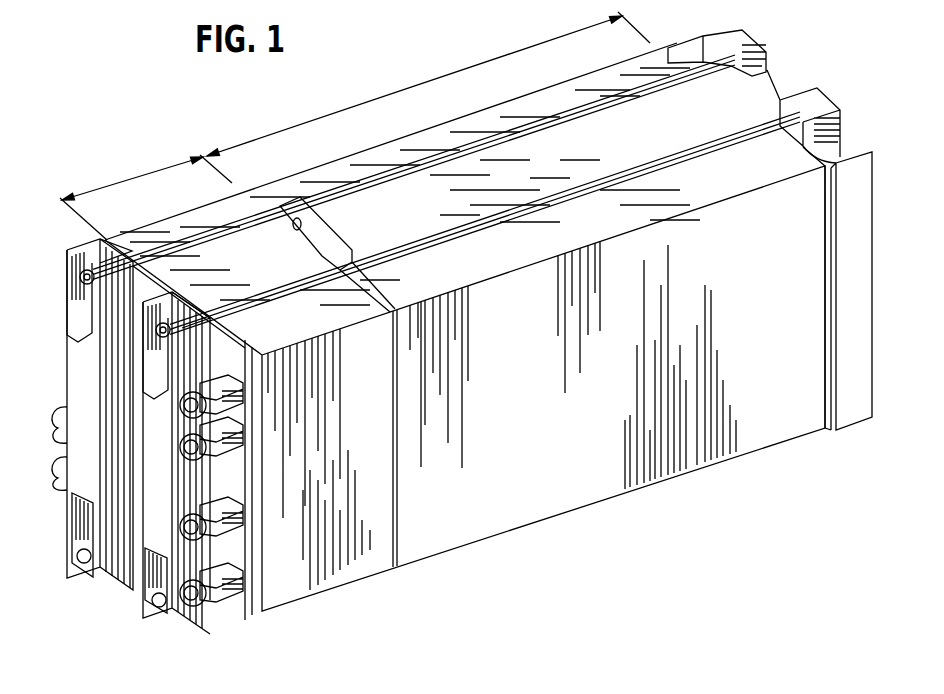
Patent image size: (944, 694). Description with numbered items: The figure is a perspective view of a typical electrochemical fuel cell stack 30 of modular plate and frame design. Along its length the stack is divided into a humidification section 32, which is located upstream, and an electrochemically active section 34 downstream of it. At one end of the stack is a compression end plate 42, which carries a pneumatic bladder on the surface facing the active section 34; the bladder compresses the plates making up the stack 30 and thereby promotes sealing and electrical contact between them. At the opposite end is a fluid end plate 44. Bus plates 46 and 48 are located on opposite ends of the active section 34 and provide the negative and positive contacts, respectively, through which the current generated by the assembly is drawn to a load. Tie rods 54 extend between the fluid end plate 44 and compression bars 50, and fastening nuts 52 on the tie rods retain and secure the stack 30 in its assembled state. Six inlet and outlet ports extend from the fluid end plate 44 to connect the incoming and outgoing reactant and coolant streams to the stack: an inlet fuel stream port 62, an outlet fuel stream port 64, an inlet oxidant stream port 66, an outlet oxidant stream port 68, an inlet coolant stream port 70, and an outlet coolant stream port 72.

The electrochemical fuel cell stack 30 is at (150, 128).
The humidification section 32 is at (135, 178).
The electrochemically active section 34 is at (397, 92).
The compression end plate 42 is at (858, 180).
The fluid end plate 44 is at (245, 532).
The bus plate 46 is at (313, 233).
The bus plate 48 is at (775, 97).
The compression bars 50 is at (147, 397).
The fastening nuts 52 is at (157, 328).
The tie rods 54 is at (500, 213).
The inlet fuel stream port 62 is at (58, 425).
The outlet fuel stream port 64 is at (60, 467).
The inlet oxidant stream port 66 is at (240, 545).
The outlet oxidant stream port 68 is at (185, 612).
The inlet coolant stream port 70 is at (240, 413).
The outlet coolant stream port 72 is at (186, 472).